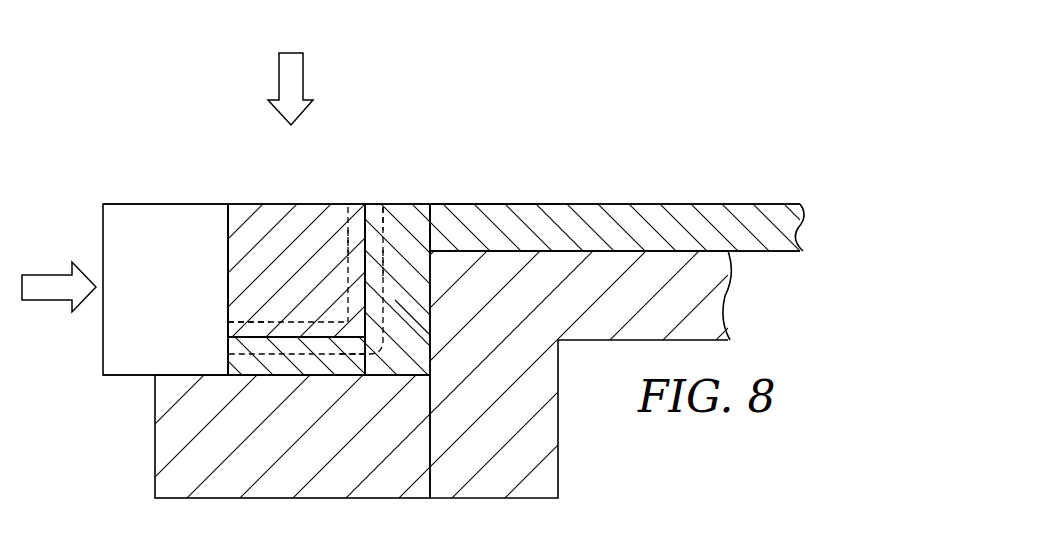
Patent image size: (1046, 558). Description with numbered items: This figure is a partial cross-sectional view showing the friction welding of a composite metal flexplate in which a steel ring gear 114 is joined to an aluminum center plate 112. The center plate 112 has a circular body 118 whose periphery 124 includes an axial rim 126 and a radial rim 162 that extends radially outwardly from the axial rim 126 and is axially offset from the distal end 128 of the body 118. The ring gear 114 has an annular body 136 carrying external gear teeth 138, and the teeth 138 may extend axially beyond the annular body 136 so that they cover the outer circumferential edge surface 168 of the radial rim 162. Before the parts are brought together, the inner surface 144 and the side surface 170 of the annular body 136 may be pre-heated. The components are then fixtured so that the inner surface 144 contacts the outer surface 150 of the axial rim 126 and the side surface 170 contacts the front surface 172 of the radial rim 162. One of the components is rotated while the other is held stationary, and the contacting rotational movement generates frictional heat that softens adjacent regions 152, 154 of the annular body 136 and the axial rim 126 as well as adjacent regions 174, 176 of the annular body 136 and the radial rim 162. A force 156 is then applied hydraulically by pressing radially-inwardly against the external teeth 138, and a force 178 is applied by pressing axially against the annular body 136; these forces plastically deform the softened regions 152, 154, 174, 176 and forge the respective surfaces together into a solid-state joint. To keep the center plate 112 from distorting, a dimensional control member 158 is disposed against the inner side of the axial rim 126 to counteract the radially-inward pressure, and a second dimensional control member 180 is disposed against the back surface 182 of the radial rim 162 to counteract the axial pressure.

The aluminum center plate 112 is at (500, 164).
The steel ring gear 114 is at (228, 170).
The circular body 118 is at (598, 213).
The periphery 124 is at (424, 186).
The axial rim 126 is at (408, 318).
The distal end 128 is at (400, 205).
The annular body 136 is at (285, 212).
The external gear teeth 138 is at (140, 222).
The inner surface 144 is at (378, 244).
The outer surface 150 is at (349, 264).
The softened region 152 is at (333, 222).
The softened region 154 is at (386, 222).
The applied force 156 is at (43, 283).
The dimensional control member 158 is at (528, 430).
The radial rim 162 is at (328, 362).
The outer circumferential edge surface 168 is at (225, 359).
The side surface 170 is at (267, 344).
The front surface 172 is at (302, 340).
The softened region 174 is at (256, 321).
The softened region 176 is at (357, 365).
The applied force 178 is at (298, 65).
The dimensional control member 180 is at (260, 492).
The back surface 182 is at (351, 375).